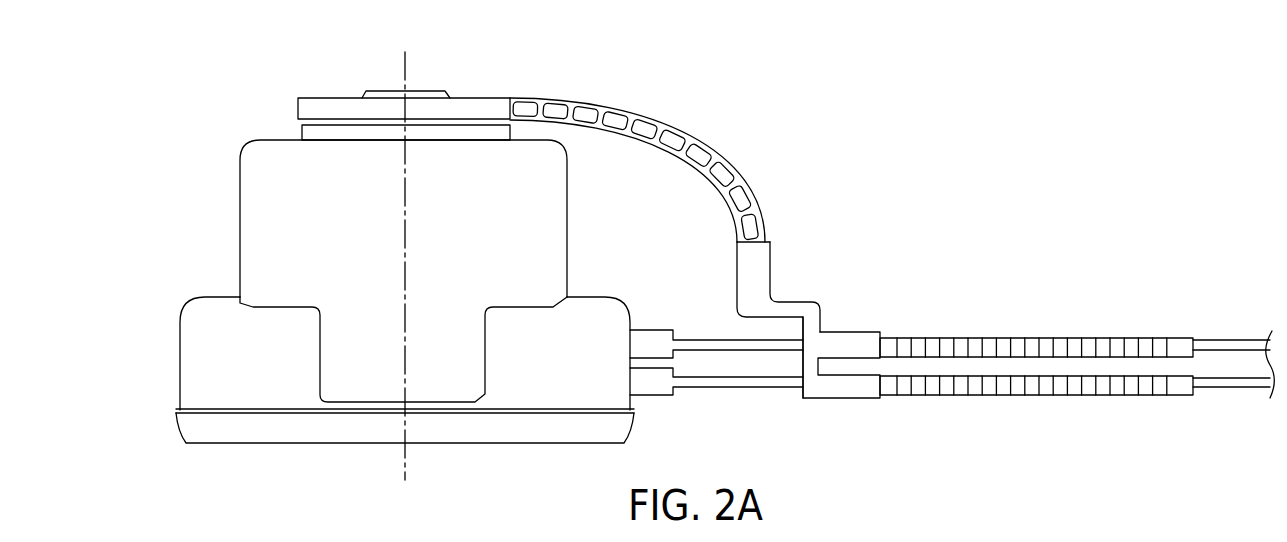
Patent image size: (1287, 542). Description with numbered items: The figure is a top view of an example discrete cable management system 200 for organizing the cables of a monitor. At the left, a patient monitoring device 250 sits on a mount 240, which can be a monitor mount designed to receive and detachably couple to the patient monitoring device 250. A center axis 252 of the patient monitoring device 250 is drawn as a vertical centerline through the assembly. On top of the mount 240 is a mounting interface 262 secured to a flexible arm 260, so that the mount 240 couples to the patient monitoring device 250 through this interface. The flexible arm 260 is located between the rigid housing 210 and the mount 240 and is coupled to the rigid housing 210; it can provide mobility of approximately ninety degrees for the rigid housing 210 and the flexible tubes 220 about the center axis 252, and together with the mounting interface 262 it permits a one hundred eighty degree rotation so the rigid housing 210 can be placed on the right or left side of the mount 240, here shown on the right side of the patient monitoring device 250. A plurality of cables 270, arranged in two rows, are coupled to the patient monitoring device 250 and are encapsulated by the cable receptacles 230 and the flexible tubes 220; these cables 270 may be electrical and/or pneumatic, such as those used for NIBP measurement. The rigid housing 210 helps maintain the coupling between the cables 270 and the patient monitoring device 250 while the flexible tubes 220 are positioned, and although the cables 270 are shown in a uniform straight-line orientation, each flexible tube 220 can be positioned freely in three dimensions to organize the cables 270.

The discrete cable management system 200 is at (1104, 72).
The rigid housing 210 is at (787, 298).
The flexible tubes 220 is at (975, 337).
The cable receptacles 230 is at (848, 330).
The mount 240 is at (235, 172).
The patient monitoring device 250 is at (178, 352).
The center axis 252 is at (403, 250).
The flexible arm 260 is at (745, 180).
The mounting interface 262 is at (307, 97).
The cables 270 is at (700, 330).